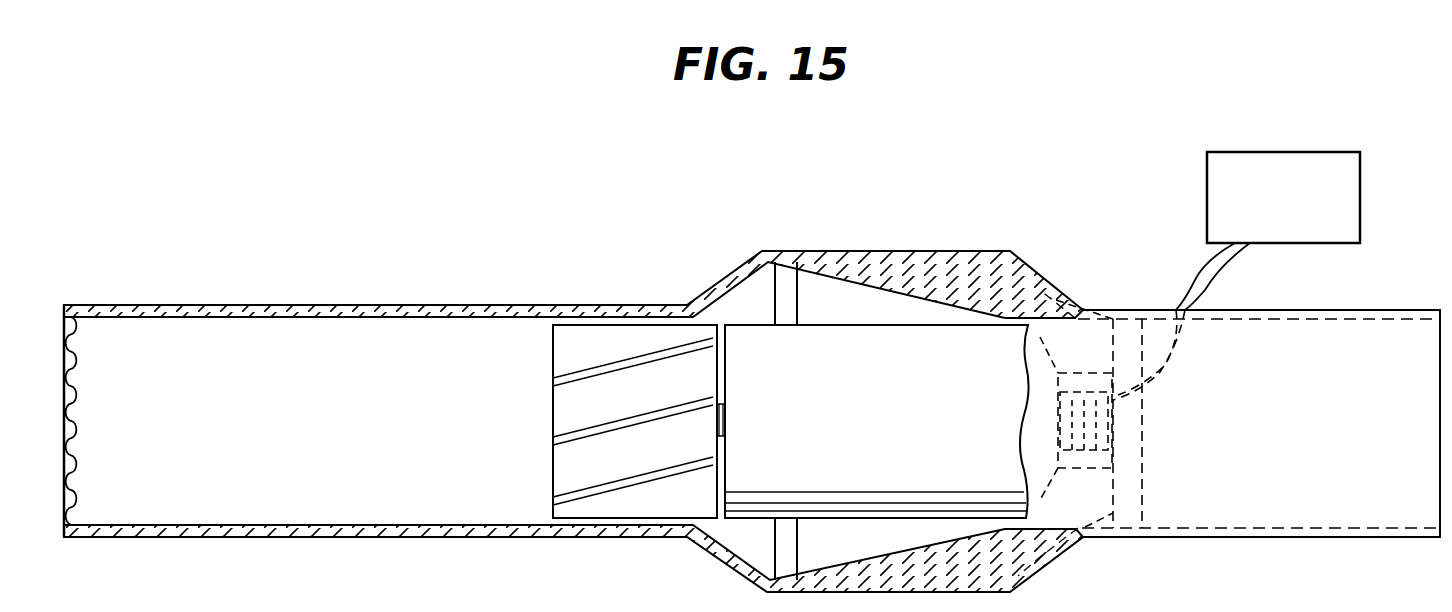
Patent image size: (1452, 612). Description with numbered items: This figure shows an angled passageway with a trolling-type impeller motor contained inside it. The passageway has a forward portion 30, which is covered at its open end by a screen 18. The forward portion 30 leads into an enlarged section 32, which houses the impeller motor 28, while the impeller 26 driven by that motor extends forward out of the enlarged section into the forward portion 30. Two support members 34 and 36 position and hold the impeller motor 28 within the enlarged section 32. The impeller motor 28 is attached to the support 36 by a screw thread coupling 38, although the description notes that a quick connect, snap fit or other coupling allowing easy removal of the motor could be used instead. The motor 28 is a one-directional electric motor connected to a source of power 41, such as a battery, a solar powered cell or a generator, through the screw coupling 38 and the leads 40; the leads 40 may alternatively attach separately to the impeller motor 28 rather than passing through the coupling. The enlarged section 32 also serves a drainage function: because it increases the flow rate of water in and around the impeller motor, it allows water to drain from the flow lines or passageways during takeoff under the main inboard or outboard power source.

The screen 18 is at (63, 448).
The impeller 26 is at (553, 408).
The impeller motor 28 is at (888, 325).
The forward portion 30 is at (366, 305).
The enlarged section 32 is at (902, 251).
The support member 34 is at (797, 286).
The support member 36 is at (1145, 490).
The screw thread coupling 38 is at (1142, 432).
The leads 40 is at (1178, 358).
The source of power 41 is at (1361, 180).